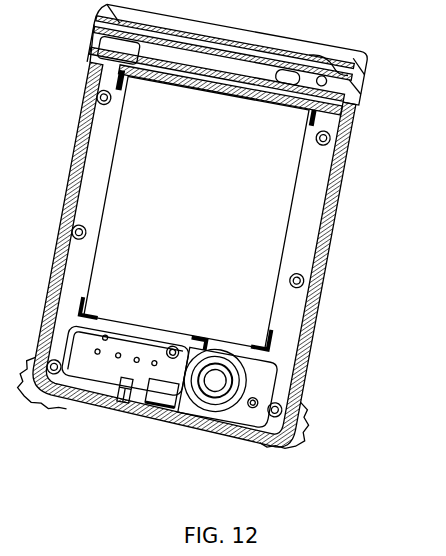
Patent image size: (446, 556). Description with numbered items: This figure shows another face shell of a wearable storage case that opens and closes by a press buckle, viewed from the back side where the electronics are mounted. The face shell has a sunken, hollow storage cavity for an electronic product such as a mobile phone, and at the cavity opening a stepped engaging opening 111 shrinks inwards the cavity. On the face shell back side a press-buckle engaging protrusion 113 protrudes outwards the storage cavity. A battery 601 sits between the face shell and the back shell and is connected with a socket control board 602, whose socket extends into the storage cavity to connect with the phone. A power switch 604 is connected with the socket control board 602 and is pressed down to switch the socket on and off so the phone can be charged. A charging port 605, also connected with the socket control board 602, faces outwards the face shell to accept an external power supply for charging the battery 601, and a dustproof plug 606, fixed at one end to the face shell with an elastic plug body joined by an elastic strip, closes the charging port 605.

The stepped engaging opening 111 is at (333, 85).
The press-buckle engaging protrusion 113 is at (118, 75).
The battery 601 is at (260, 238).
The socket control board 602 is at (260, 382).
The power switch 604 is at (207, 423).
The charging port 605 is at (152, 418).
The dustproof plug 606 is at (138, 415).